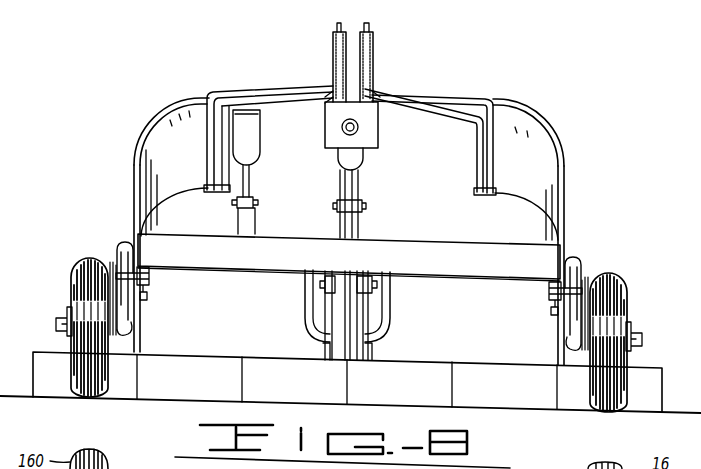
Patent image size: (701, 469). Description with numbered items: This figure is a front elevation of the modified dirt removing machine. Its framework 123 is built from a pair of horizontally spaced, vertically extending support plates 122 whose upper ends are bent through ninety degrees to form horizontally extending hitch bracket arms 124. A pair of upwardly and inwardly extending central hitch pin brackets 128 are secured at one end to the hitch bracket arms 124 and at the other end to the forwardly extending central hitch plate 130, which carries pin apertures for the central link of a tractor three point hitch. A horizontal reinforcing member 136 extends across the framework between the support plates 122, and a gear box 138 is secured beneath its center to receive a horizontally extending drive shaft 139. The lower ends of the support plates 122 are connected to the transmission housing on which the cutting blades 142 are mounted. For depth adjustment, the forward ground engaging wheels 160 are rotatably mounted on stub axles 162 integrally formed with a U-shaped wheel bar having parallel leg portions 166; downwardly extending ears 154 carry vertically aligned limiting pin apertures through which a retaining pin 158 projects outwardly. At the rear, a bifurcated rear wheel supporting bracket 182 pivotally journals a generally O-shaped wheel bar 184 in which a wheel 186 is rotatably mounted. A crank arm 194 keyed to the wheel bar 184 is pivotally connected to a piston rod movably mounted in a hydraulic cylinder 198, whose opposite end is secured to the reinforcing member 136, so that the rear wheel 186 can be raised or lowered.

The support plate 122 is at (137, 193).
The framework 123 is at (560, 135).
The hitch bracket arm 124 is at (202, 186).
The central hitch pin bracket 128 is at (289, 94).
The central hitch plate 130 is at (337, 27).
The horizontal reinforcing member 136 is at (461, 101).
The gear box 138 is at (374, 133).
The drive shaft 139 is at (342, 128).
The cutting blades 142 is at (306, 389).
The ear 154 is at (456, 266).
The retaining pin 158 is at (122, 248).
The forward ground engaging wheel 160 is at (80, 260).
The stub axle 162 is at (56, 326).
The leg portion 166 is at (128, 323).
The rear wheel supporting bracket 182 is at (366, 286).
The O-shaped wheel bar 184 is at (312, 294).
The wheel 186 is at (360, 317).
The crank arm 194 is at (339, 220).
The hydraulic cylinder 198 is at (364, 162).